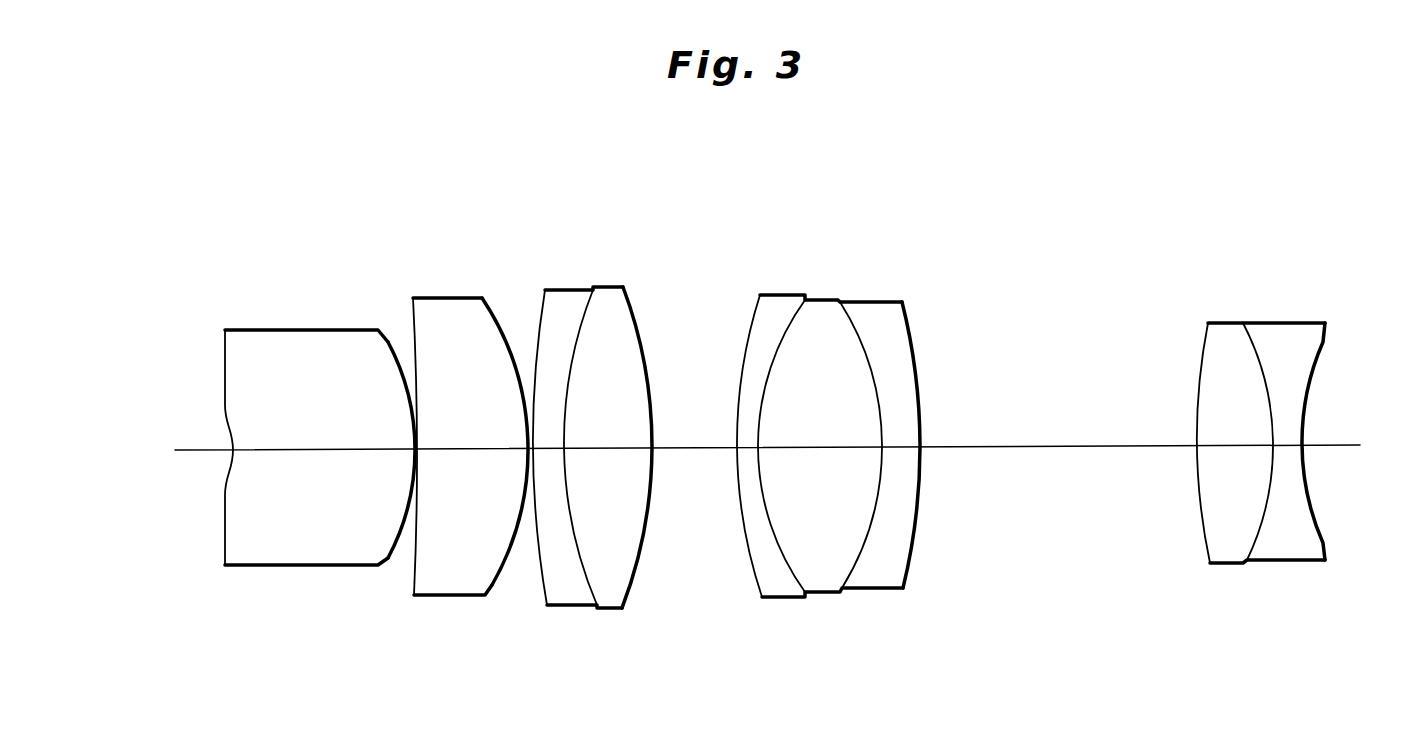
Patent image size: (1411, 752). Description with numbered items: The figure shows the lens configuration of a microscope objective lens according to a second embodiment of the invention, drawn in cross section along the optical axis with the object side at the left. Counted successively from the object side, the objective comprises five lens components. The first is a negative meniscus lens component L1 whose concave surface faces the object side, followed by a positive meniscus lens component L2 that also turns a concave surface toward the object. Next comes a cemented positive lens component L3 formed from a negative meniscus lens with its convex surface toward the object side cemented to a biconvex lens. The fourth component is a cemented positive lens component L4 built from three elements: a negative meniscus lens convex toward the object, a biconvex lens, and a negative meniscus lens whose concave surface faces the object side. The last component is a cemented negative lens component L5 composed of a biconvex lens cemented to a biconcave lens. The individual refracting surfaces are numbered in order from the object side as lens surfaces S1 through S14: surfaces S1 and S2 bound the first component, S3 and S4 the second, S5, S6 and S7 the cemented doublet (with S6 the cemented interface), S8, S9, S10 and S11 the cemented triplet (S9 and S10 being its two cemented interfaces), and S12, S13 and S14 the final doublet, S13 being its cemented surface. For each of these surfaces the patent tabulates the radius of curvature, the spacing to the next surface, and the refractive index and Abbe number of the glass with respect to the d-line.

The negative meniscus lens component L1 is at (275, 503).
The positive meniscus lens component L2 is at (446, 505).
The cemented positive lens component L3 is at (600, 499).
The cemented positive lens component L4 is at (852, 503).
The cemented negative lens component L5 is at (1254, 495).
The lens surface S1 is at (225, 508).
The lens surface S2 is at (374, 552).
The lens surface S3 is at (413, 566).
The lens surface S4 is at (498, 586).
The lens surface S5 is at (545, 577).
The lens surface S6 is at (583, 577).
The lens surface S7 is at (637, 580).
The lens surface S8 is at (750, 567).
The lens surface S9 is at (790, 567).
The lens surface S10 is at (857, 567).
The lens surface S11 is at (917, 545).
The lens surface S12 is at (1200, 527).
The lens surface S13 is at (1260, 523).
The lens surface S14 is at (1313, 523).